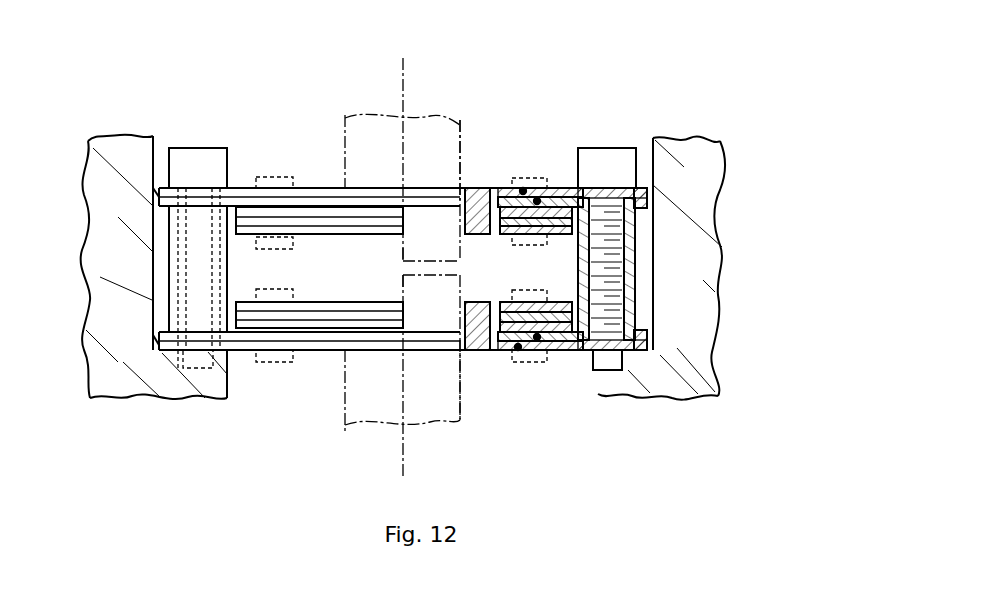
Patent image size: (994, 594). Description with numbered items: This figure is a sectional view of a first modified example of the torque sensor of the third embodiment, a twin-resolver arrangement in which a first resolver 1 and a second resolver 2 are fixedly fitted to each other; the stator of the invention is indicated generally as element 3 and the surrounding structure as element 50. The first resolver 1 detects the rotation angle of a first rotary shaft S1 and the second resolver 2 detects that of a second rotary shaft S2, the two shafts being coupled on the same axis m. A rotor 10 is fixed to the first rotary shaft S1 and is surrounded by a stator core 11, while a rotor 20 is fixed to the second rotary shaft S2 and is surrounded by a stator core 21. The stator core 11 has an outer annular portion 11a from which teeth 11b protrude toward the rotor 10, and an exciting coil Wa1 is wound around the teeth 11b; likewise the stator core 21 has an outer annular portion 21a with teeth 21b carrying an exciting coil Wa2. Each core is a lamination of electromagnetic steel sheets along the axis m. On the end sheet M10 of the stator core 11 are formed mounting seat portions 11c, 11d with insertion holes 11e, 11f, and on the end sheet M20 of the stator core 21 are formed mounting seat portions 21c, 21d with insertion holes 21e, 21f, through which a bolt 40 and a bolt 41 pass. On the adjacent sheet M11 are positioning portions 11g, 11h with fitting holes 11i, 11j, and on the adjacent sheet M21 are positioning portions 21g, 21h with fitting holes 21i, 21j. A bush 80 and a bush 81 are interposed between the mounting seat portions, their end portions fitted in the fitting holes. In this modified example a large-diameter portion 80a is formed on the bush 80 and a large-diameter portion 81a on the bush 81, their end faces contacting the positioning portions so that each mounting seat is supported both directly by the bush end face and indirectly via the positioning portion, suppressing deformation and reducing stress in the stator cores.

The first resolver 1 is at (580, 89).
The second resolver 2 is at (562, 431).
The coupling members 3 is at (402, 273).
The rotor 10 is at (480, 187).
The rotor 20 is at (484, 352).
The stator core 11 is at (370, 186).
The stator core 21 is at (360, 353).
The outer annular portion 11a is at (553, 198).
The outer annular portion 21a is at (538, 352).
The teeth 11b is at (494, 238).
The teeth 21b is at (494, 301).
The mounting seat portion 11c is at (640, 187).
The mounting seat portion 21c is at (637, 352).
The mounting seat portion 11d is at (161, 187).
The mounting seat portion 21d is at (162, 376).
The insertion hole 11e is at (580, 186).
The insertion hole 21e is at (600, 372).
The insertion hole 11f is at (202, 250).
The insertion hole 21f is at (206, 370).
The positioning portion 11g is at (650, 197).
The positioning portion 21g is at (650, 341).
The positioning portion 11h is at (158, 197).
The positioning portion 21h is at (158, 341).
The fitting hole 11i is at (582, 187).
The fitting hole 21i is at (582, 332).
The fitting hole 11j is at (205, 215).
The fitting hole 21j is at (222, 307).
The bolt 40 is at (626, 147).
The bolt 41 is at (187, 147).
The housing wall 50 is at (723, 215).
The bush 80 is at (636, 254).
The large-diameter portion 80a is at (637, 298).
The bush 81 is at (153, 267).
The large-diameter portion 81a is at (156, 318).
The electromagnetic steel sheet M10 is at (522, 189).
The electromagnetic steel sheet M11 is at (537, 199).
The electromagnetic steel sheet M20 is at (518, 352).
The electromagnetic steel sheet M21 is at (537, 342).
The first rotary shaft S1 is at (462, 124).
The second rotary shaft S2 is at (462, 422).
The axis m is at (403, 76).
The exciting coil Wa1 is at (272, 176).
The exciting coil Wa2 is at (270, 364).